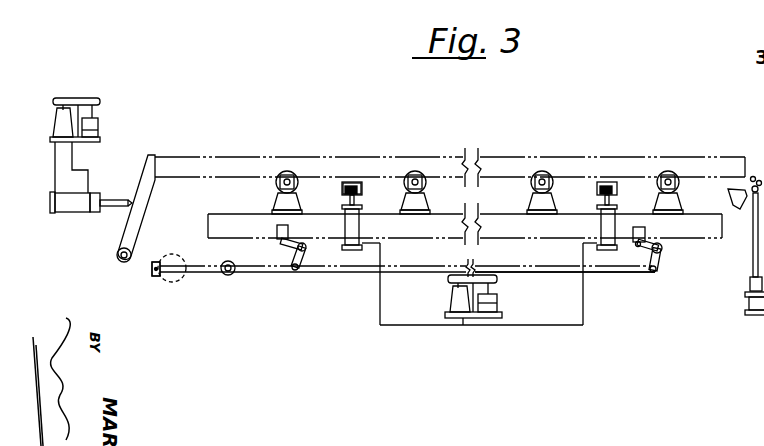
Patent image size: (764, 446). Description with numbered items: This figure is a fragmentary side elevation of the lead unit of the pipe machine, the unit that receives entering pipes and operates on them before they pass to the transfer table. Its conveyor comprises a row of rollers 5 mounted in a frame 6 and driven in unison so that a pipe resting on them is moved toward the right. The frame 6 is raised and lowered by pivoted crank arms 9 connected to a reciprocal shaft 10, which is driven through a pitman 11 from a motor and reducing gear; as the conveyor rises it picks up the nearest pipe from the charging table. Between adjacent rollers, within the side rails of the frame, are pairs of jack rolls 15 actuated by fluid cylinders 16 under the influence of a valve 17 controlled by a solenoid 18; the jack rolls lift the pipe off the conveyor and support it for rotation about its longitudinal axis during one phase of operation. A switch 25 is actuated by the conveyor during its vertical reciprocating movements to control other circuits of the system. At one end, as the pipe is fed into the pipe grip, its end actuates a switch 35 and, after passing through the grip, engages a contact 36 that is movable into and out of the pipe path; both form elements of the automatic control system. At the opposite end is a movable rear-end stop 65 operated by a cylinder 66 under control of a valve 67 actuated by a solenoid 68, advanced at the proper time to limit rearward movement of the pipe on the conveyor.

The rollers 5 is at (540, 172).
The frame 6 is at (565, 229).
The crank arms 9 is at (657, 263).
The reciprocal shaft 10 is at (590, 269).
The pitman 11 is at (207, 268).
The jack rolls 15 is at (350, 184).
The fluid cylinders 16 is at (359, 224).
The valve 17 is at (452, 305).
The solenoid 18 is at (498, 302).
The switch 25 is at (172, 276).
The switch 35 is at (728, 196).
The contact 36 is at (754, 218).
The rear-end stop 65 is at (147, 178).
The cylinder 66 is at (77, 203).
The valve 67 is at (57, 125).
The solenoid 68 is at (100, 125).